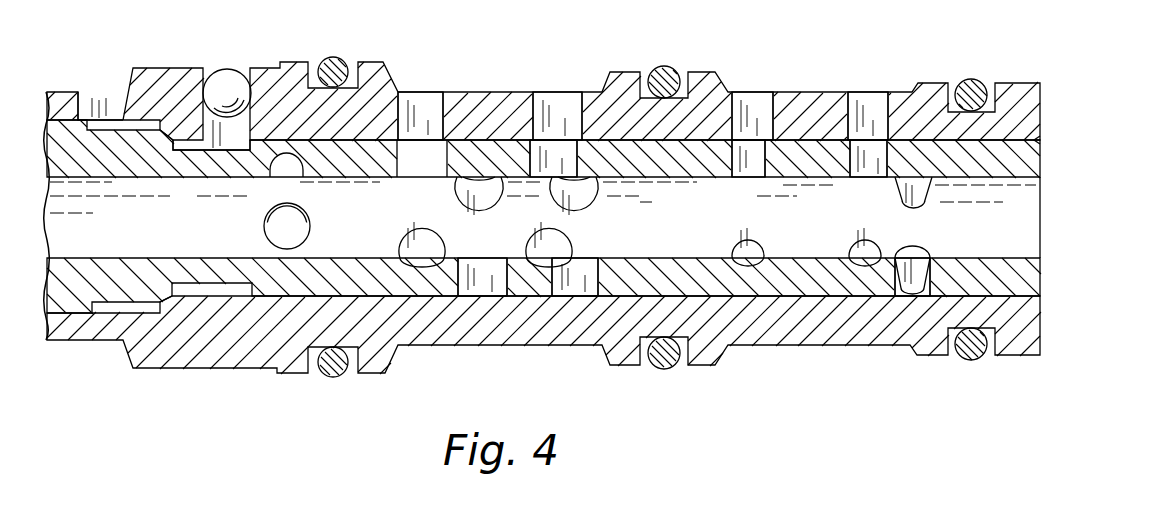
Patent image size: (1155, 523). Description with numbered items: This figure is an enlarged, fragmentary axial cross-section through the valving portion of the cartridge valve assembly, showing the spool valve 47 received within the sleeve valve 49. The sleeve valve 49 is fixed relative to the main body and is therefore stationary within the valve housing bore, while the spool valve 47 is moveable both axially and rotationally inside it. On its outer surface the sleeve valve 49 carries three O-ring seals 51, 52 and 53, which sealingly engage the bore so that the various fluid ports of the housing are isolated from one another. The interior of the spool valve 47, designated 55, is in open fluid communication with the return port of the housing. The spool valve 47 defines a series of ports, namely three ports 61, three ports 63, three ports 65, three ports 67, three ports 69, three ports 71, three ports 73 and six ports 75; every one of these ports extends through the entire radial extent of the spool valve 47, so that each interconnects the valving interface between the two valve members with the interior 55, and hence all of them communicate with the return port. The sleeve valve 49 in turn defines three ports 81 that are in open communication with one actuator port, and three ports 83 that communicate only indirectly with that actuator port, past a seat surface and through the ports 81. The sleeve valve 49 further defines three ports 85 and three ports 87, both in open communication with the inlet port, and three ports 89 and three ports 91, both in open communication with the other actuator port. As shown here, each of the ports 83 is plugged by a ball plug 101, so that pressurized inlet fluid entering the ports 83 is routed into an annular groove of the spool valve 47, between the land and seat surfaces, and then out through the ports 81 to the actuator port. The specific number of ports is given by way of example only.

The spool valve 47 is at (1037, 165).
The sleeve valve 49 is at (1037, 112).
The O-ring seal 51 is at (344, 378).
The O-ring seal 52 is at (676, 369).
The O-ring seal 53 is at (961, 360).
The interior of the spool valve 55 is at (999, 242).
The ports 61 is at (288, 228).
The ports 63 is at (422, 236).
The ports 65 is at (486, 280).
The ports 67 is at (533, 158).
The ports 69 is at (576, 280).
The ports 71 is at (748, 162).
The ports 73 is at (858, 162).
The ports 75 is at (910, 298).
The ports 81 is at (104, 101).
The ports 83 is at (222, 130).
The ports 85 is at (418, 107).
The ports 87 is at (570, 103).
The ports 89 is at (758, 108).
The ports 91 is at (873, 105).
The ball plug 101 is at (222, 86).